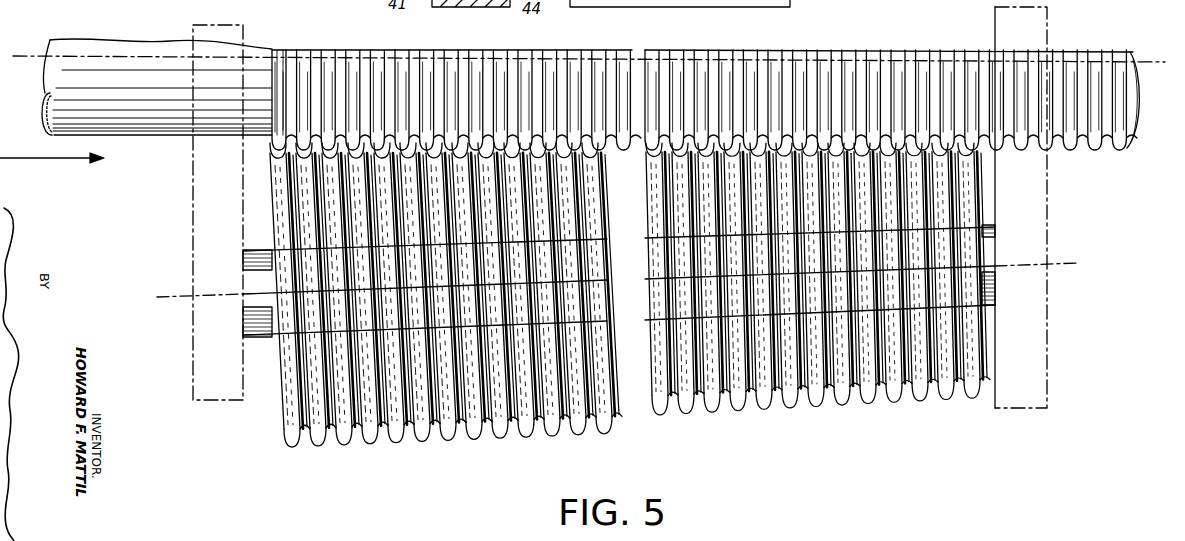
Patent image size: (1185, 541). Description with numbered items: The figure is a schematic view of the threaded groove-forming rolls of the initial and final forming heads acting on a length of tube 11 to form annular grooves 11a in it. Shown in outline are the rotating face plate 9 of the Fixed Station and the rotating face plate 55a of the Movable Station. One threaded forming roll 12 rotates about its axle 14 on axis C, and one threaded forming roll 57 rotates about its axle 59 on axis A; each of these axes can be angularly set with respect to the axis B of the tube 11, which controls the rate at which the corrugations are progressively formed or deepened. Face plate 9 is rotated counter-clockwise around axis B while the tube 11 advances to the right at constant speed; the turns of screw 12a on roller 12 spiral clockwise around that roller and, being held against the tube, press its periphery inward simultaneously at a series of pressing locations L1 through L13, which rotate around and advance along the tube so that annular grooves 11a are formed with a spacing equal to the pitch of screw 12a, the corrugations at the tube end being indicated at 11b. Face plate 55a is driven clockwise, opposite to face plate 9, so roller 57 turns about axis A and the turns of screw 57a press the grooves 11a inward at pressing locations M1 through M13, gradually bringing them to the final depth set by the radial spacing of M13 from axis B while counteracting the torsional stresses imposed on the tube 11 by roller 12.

The rotating face plate of the Fixed Station 9 is at (192, 200).
The tube 11 is at (46, 105).
The annular grooves 11a is at (562, 49).
The corrugations at tube end 11b is at (1114, 156).
The threaded forming roll 12 is at (276, 419).
The screw turns of roller 12a is at (396, 441).
The axle 14 is at (250, 268).
The threaded forming roll 57 is at (982, 372).
The screw turns of roller 57a is at (837, 406).
The axle 59 is at (985, 292).
The rotating face plate of the Movable Station 55a is at (1048, 362).
The pressing location L1 is at (270, 140).
The pressing location L13 is at (578, 140).
The pressing location M1 is at (648, 140).
The pressing location M13 is at (971, 136).
The axis of rotation of threaded forming roll 57 A is at (1079, 265).
The axis of tube B is at (589, 49).
The axis of rotation of threaded forming roll 12 C is at (161, 297).